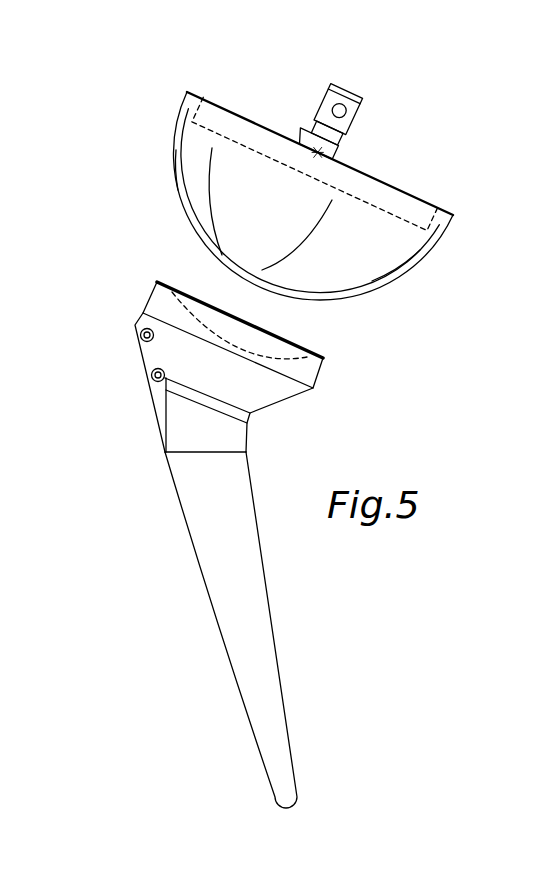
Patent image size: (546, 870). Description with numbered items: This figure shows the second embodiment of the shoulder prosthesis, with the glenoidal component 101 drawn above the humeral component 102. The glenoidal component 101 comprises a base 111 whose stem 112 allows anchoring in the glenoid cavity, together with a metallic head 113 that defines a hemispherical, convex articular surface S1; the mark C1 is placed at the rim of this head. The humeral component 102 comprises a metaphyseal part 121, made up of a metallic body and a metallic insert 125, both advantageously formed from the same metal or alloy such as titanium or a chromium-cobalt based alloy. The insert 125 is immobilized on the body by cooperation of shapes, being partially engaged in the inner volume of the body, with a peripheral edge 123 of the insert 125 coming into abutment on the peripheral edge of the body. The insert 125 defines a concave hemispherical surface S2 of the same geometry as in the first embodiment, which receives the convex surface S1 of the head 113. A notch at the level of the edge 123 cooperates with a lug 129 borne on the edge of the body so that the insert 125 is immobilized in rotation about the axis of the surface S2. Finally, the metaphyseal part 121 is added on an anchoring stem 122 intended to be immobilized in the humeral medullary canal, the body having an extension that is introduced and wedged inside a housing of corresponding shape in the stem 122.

The glenoidal component 101 is at (158, 104).
The humeral component 102 is at (116, 312).
The base 111 is at (387, 190).
The stem 112 is at (330, 88).
The metallic head 113 is at (390, 260).
The metaphyseal part 121 is at (165, 353).
The anchoring stem 122 is at (207, 548).
The peripheral edge 123 is at (190, 285).
The insert 125 is at (330, 357).
The lug 129 is at (160, 276).
The cup center C1 is at (316, 148).
The hemispherical convex articular surface S1 is at (172, 168).
The concave hemispherical surface S2 is at (265, 350).